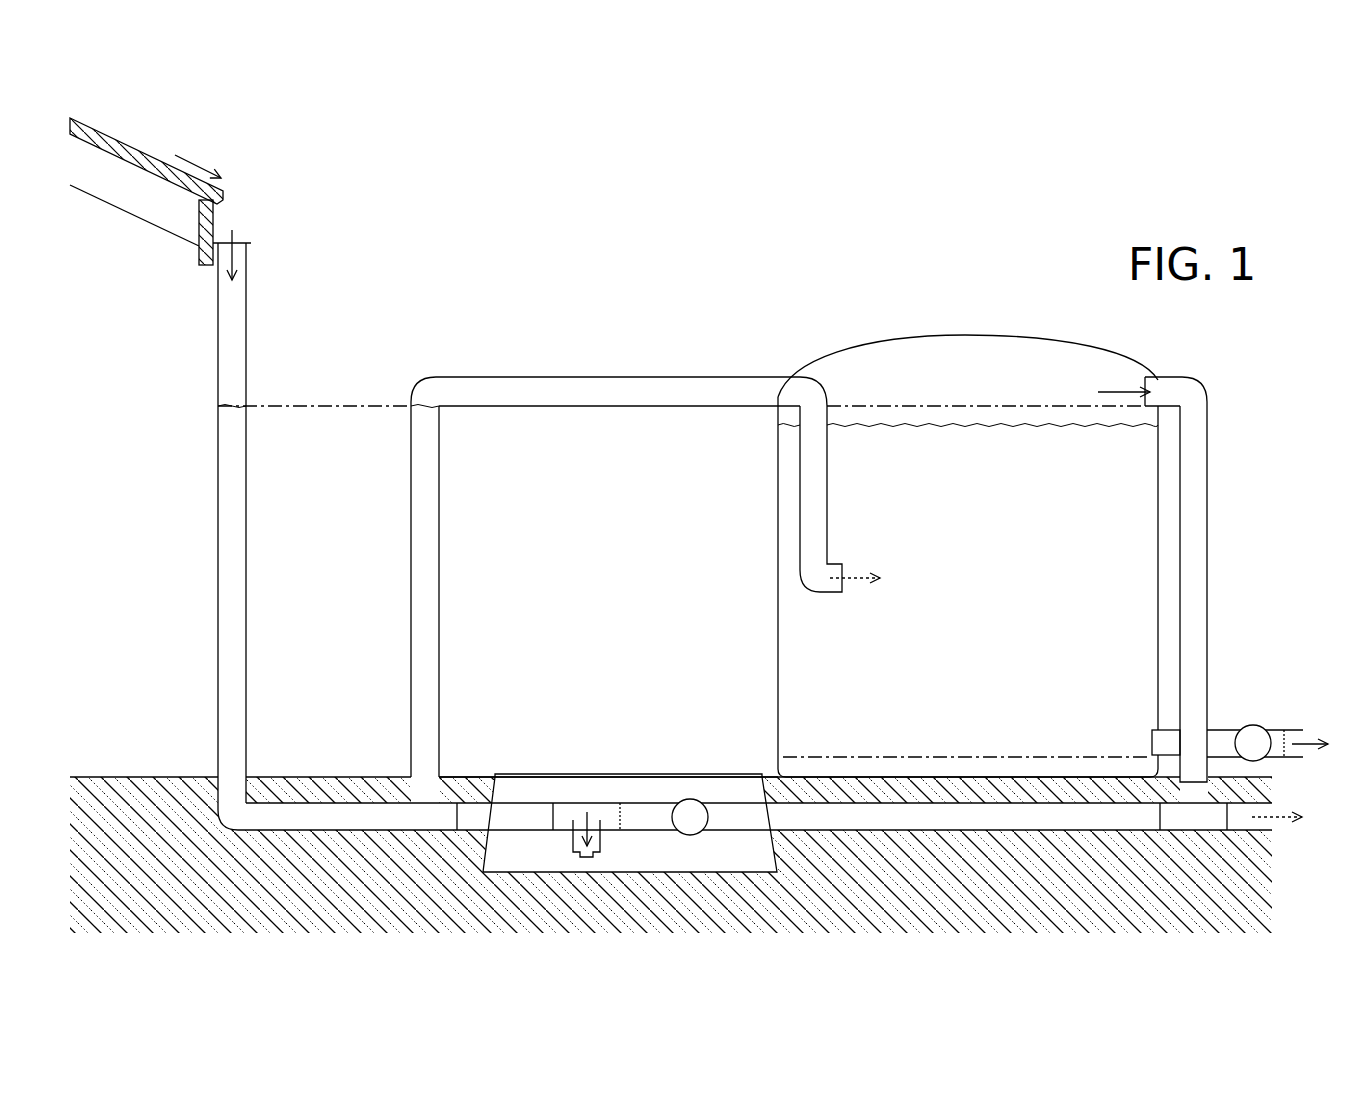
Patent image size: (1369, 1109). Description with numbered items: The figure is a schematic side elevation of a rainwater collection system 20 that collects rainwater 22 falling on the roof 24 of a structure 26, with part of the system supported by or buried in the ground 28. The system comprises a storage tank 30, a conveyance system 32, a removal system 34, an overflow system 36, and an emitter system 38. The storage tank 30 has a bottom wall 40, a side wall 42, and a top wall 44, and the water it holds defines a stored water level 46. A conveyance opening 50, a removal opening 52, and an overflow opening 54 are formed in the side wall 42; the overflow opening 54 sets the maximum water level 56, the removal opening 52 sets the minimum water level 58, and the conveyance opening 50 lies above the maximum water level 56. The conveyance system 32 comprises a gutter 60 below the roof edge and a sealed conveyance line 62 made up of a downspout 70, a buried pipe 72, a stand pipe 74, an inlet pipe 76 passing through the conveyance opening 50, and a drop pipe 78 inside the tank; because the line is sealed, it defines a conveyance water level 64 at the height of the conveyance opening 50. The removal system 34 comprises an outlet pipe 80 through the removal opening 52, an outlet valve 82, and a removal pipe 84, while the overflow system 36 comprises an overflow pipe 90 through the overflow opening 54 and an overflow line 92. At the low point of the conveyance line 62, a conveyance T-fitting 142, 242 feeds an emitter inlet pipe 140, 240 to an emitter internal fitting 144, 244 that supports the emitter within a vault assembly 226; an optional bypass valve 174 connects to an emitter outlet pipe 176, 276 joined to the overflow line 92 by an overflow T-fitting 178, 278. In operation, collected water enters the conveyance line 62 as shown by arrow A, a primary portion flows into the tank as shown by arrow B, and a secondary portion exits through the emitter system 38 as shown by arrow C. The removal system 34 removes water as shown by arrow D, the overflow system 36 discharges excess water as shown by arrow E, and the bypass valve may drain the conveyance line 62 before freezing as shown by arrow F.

The rainwater collection system 20 is at (1035, 270).
The rainwater 22 is at (200, 166).
The roof 24 is at (112, 133).
The structure 26 is at (142, 206).
The ground 28 is at (696, 828).
The storage tank 30 is at (645, 587).
The conveyance system 32 is at (621, 546).
The removal system 34 is at (1275, 702).
The overflow system 36 is at (1236, 579).
The emitter system 38 is at (617, 779).
The bottom wall 40 is at (898, 777).
The side wall 42 is at (781, 638).
The top wall 44 is at (980, 535).
The stored water level 46 is at (987, 408).
The conveyance opening 50 is at (780, 397).
The removal opening 52 is at (1150, 744).
The overflow opening 54 is at (1143, 383).
The maximum water level 56 is at (925, 405).
The minimum water level 58 is at (847, 758).
The gutter 60 is at (265, 208).
The conveyance line 62 is at (214, 466).
The conveyance water level 64 is at (320, 405).
The downspout 70 is at (193, 536).
The buried pipe 72 is at (303, 806).
The stand pipe 74 is at (413, 542).
The inlet pipe 76 is at (582, 384).
The drop pipe 78 is at (822, 501).
The outlet pipe 80 is at (1267, 692).
The outlet valve 82 is at (1257, 723).
The removal pipe 84 is at (1285, 730).
The overflow pipe 90 is at (1205, 540).
The overflow line 92 is at (1262, 852).
The emitter inlet pipe 140 is at (505, 772).
The emitter inlet pipe 240 is at (513, 811).
The conveyance T-fitting 142 is at (328, 758).
The conveyance T-fitting 242 is at (404, 806).
The emitter internal fitting 144 is at (535, 774).
The emitter internal fitting 244 is at (576, 813).
The bypass valve 174 is at (695, 797).
The emitter outlet pipe 176 is at (979, 756).
The emitter outlet pipe 276 is at (992, 806).
The overflow T-fitting 178 is at (1187, 834).
The overflow T-fitting 278 is at (1194, 828).
The vault assembly 226 is at (718, 772).
The arrow A is at (248, 255).
The arrow B is at (846, 590).
The arrow C is at (590, 822).
The arrow D is at (1303, 745).
The arrow E is at (1112, 395).
The arrow F is at (1268, 817).